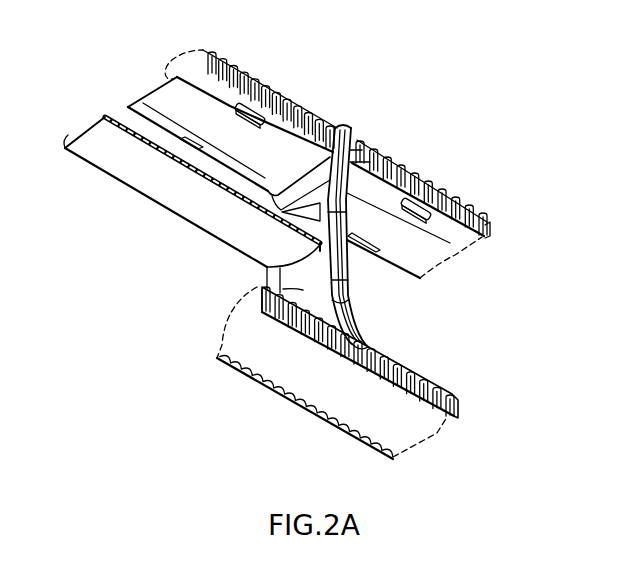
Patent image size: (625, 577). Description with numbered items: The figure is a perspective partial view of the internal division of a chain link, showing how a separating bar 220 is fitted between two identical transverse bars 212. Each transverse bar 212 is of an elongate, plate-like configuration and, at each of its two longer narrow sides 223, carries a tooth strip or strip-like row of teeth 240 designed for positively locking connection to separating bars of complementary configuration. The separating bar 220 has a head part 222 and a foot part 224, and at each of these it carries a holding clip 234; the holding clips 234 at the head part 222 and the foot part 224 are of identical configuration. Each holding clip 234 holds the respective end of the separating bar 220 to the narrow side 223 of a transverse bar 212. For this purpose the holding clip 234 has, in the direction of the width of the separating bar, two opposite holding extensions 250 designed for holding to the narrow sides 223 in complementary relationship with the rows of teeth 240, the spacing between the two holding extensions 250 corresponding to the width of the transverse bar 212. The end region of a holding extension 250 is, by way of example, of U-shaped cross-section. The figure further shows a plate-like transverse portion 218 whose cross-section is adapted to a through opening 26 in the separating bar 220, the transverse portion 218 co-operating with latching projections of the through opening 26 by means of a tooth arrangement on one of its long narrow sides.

The through opening 26 is at (303, 291).
The transverse bar 212 is at (180, 105).
The transverse portion 218 is at (125, 163).
The separating bar 220 is at (290, 277).
The head part 222 is at (353, 164).
The narrow side 223 is at (270, 85).
The foot part 224 is at (347, 312).
The holding clip 234 is at (357, 153).
The row of teeth 240 is at (228, 66).
The holding extension 250 is at (343, 128).